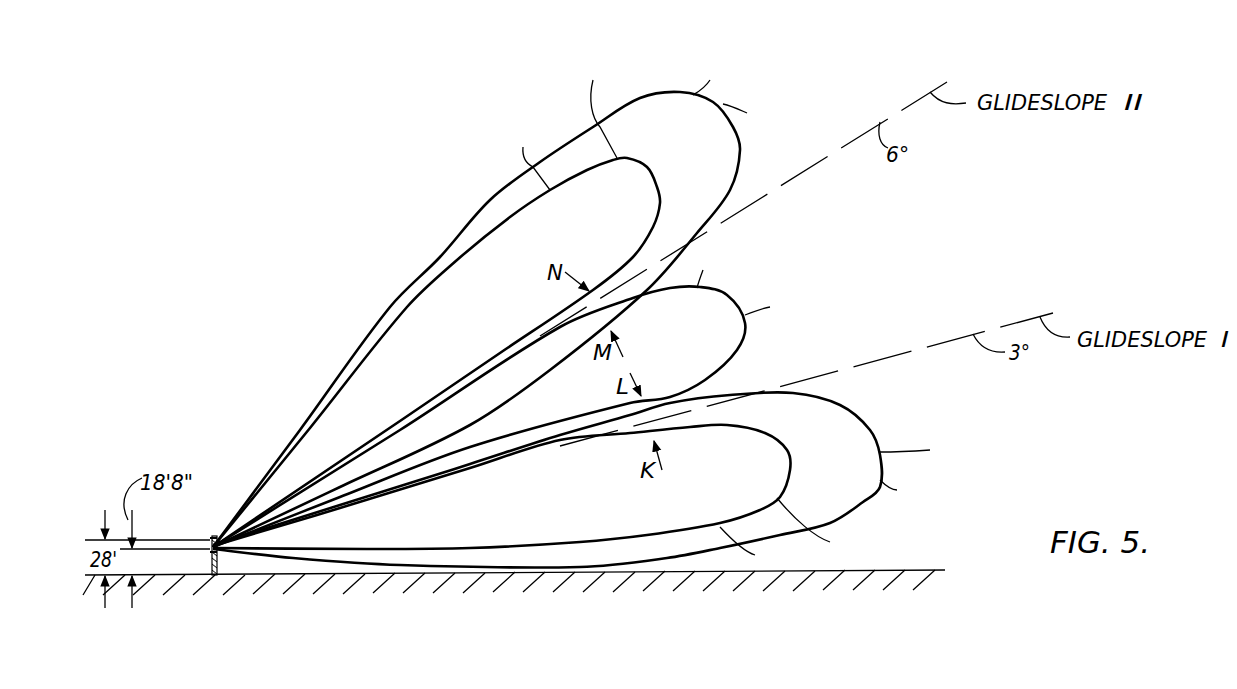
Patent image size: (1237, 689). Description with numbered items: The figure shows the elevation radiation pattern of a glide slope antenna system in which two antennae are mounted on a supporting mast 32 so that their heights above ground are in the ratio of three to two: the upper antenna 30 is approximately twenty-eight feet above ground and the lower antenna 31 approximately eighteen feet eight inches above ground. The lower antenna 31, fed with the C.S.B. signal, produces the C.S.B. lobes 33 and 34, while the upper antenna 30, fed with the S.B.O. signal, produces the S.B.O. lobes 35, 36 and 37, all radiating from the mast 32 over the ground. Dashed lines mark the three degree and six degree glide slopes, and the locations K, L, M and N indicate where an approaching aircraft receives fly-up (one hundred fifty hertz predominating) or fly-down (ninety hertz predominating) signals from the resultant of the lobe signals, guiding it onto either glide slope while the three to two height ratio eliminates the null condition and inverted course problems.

The upper antenna 30 is at (210, 538).
The lower antenna 31 is at (210, 552).
The supporting mast 32 is at (217, 563).
The C.S.B. lobe 33 is at (875, 432).
The C.S.B. lobe 34 is at (490, 202).
The S.B.O. lobe 35 is at (667, 537).
The S.B.O. lobe 36 is at (745, 347).
The S.B.O. lobe 37 is at (458, 262).